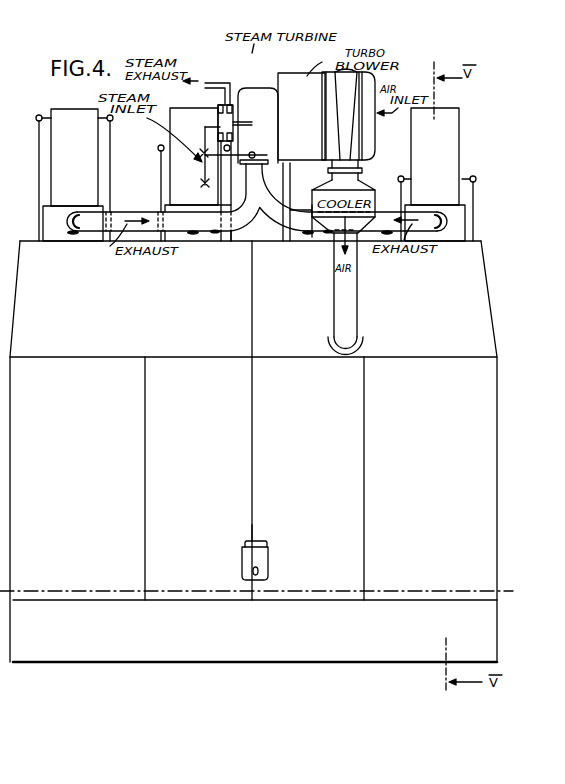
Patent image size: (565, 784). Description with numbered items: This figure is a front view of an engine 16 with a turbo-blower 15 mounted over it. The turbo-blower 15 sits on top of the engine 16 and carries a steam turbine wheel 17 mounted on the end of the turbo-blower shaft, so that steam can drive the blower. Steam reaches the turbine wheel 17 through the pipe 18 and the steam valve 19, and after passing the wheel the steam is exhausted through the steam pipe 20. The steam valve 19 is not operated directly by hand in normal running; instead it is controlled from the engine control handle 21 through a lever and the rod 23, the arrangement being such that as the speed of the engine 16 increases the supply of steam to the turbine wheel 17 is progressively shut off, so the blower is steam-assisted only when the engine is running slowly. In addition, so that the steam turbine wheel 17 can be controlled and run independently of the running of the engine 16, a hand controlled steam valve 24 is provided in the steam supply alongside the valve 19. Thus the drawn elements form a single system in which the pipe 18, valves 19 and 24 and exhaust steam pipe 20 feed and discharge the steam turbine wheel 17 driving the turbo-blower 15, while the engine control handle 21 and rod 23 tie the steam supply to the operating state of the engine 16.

The turbo-blower 15 is at (291, 95).
The engine 16 is at (488, 460).
The steam turbine wheel 17 is at (230, 103).
The pipe 18 is at (202, 165).
The valve 19 is at (199, 152).
The steam pipe 20 is at (197, 82).
The engine control handle 21 is at (268, 558).
The rod 23 is at (253, 440).
The hand controlled steam valve 24 is at (203, 183).